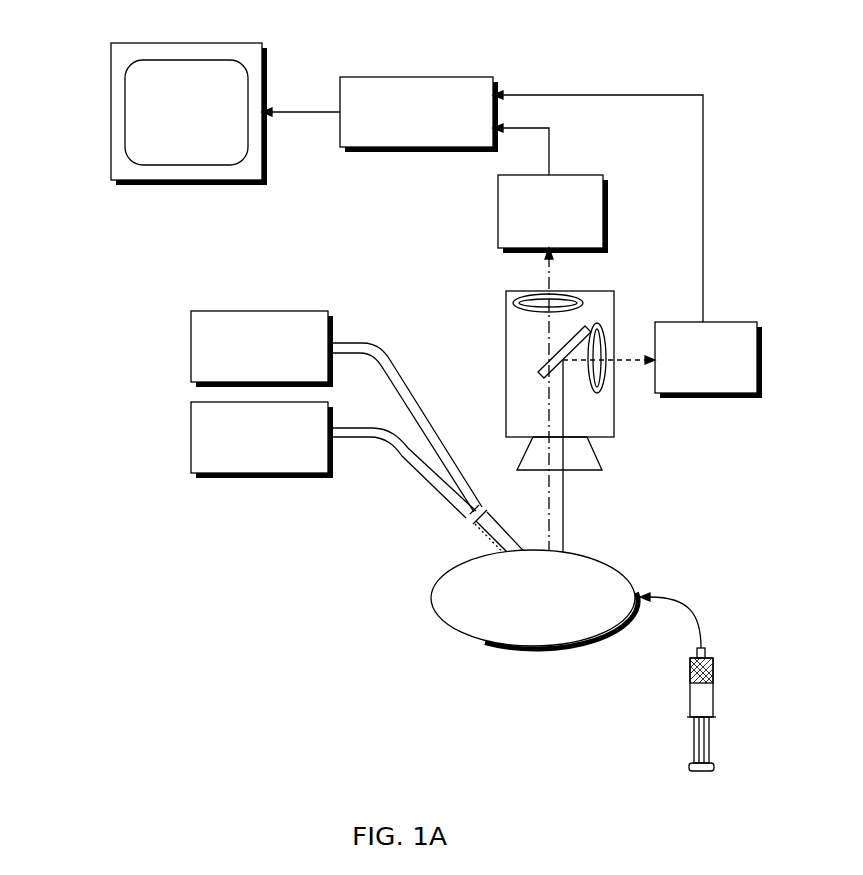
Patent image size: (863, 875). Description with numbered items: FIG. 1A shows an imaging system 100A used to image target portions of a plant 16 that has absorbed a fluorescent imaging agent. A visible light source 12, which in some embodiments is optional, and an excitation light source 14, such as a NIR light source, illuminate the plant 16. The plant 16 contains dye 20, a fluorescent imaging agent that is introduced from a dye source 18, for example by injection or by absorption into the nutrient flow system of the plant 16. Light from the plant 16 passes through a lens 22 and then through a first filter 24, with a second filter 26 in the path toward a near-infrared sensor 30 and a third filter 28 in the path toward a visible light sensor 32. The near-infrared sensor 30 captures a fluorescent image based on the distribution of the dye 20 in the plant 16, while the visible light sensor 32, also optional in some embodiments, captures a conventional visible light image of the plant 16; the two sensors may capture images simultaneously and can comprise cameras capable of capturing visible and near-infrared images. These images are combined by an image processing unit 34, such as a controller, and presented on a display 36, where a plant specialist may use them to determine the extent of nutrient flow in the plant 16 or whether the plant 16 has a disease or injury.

The imaging system 100A is at (468, 686).
The visible light source 12 is at (191, 350).
The excitation light source 14 is at (191, 439).
The plant 16 is at (432, 600).
The dye source 18 is at (717, 682).
The dye 20 is at (714, 675).
The lens 22 is at (592, 455).
The first filter 24 is at (538, 363).
The second filter 26 is at (513, 303).
The third filter 28 is at (607, 377).
The near-infrared sensor 30 is at (498, 213).
The visible light sensor 32 is at (760, 358).
The image processing unit 34 is at (457, 77).
The display 36 is at (111, 115).